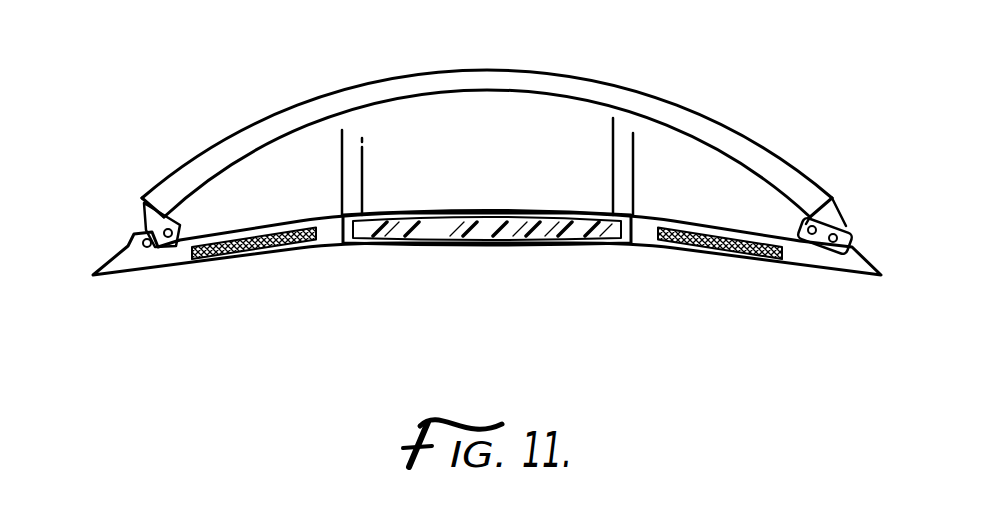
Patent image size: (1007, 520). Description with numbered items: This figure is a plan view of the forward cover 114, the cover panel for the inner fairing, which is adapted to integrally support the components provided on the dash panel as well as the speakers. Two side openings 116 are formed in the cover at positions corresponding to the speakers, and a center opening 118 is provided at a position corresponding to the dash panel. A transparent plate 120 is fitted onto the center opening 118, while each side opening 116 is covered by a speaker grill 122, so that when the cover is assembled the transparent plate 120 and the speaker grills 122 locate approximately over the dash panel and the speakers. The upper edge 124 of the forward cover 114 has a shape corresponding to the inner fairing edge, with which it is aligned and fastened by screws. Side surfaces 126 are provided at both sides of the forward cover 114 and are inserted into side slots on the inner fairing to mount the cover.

The forward cover 114 is at (717, 88).
The side openings 116 is at (269, 215).
The center opening 118 is at (460, 194).
The transparent plate 120 is at (455, 225).
The speaker grill 122 is at (263, 250).
The upper edge 124 is at (519, 70).
The side surfaces 126 is at (140, 214).